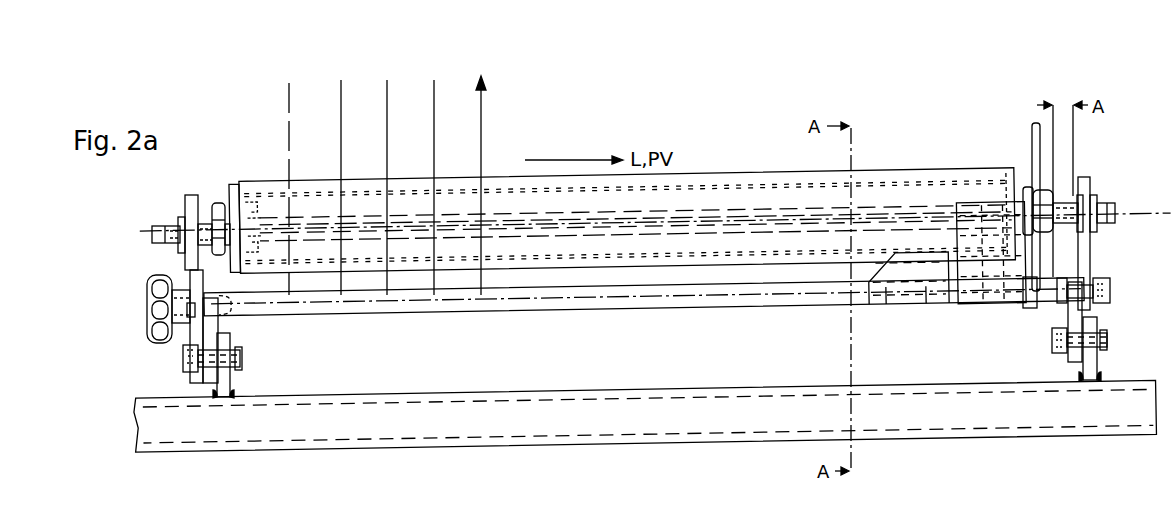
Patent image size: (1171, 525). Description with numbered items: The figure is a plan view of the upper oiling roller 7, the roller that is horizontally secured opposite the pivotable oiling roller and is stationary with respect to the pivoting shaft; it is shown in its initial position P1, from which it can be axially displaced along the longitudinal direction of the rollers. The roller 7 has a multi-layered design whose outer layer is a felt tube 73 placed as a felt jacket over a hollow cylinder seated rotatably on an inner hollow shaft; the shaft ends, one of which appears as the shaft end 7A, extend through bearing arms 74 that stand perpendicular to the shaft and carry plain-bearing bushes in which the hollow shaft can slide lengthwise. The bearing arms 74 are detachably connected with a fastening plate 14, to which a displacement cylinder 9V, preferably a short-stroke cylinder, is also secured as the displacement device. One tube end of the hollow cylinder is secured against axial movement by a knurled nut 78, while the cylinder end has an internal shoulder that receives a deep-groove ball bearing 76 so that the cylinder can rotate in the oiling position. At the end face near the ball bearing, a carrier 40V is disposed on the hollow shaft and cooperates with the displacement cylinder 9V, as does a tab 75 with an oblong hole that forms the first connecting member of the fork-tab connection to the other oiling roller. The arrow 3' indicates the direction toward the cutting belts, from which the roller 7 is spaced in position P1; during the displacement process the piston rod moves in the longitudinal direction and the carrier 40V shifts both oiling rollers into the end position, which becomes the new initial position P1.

The upper oiling roller 7 is at (421, 172).
The shaft end 7A is at (150, 232).
The knurled nut 78 is at (226, 203).
The rotation direction 3' is at (464, 61).
The felt tube 73 is at (770, 198).
The tab 75 is at (1031, 132).
The deep-groove ball bearing 76 is at (1049, 226).
The bearing arm 74 is at (1090, 252).
The fastening plate 14 is at (777, 298).
The displacement cylinder 9V is at (978, 297).
The carrier 40V is at (1031, 291).
The initial position P1 is at (612, 360).